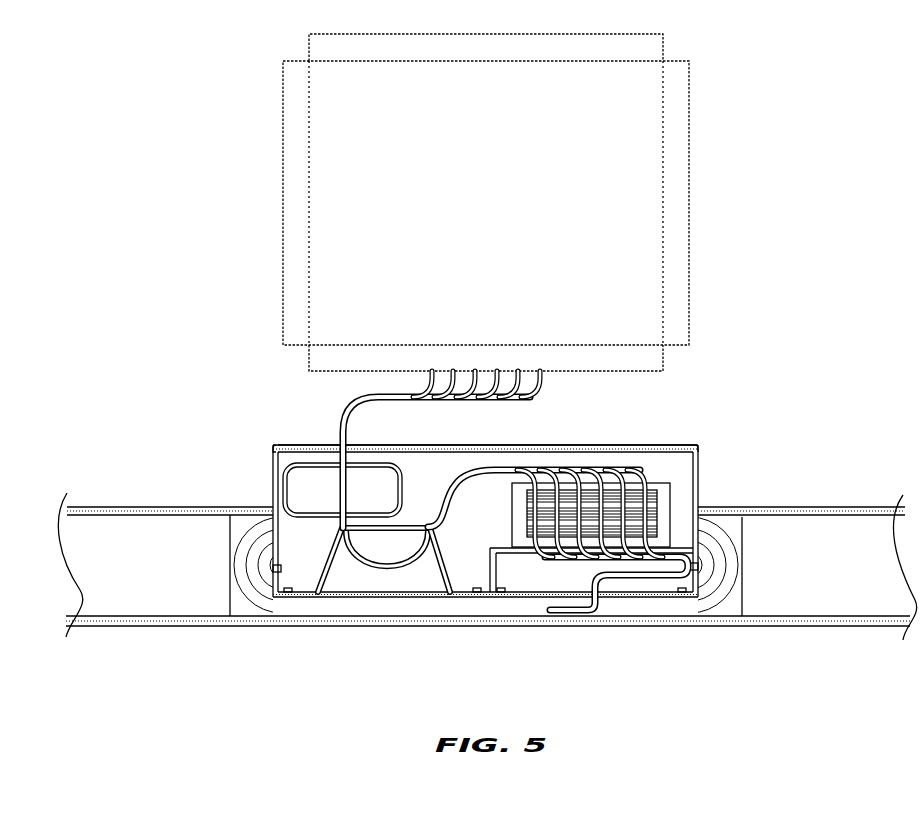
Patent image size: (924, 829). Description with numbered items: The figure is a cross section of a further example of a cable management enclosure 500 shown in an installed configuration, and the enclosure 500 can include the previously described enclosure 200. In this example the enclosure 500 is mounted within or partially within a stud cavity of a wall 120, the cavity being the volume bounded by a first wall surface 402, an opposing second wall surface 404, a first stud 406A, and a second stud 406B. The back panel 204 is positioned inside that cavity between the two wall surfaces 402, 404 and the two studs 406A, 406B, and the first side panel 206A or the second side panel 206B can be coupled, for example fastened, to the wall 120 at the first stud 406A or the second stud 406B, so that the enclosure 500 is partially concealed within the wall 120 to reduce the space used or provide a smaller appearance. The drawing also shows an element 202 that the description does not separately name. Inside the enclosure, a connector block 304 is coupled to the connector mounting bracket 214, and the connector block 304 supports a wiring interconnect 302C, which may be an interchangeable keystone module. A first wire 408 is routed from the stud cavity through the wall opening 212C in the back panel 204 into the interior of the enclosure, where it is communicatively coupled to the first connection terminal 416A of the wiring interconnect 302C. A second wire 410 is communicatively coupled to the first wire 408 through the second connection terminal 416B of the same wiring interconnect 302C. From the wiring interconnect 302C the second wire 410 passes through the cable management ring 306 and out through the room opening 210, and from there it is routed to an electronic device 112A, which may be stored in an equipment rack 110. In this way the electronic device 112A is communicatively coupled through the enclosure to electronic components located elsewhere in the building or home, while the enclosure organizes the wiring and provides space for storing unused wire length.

The cable management enclosure 500 is at (118, 48).
The equipment rack 110 is at (689, 200).
The electronic device 112A is at (485, 34).
The wall 120 is at (487, 561).
The enclosure 200 is at (290, 434).
The housing 202 is at (488, 541).
The back panel 204 is at (675, 590).
The first side panel 206A is at (273, 470).
The second side panel 206B is at (698, 463).
The room opening 210 is at (286, 492).
The wall opening 212C is at (557, 604).
The connector mounting bracket 214 is at (488, 572).
The wiring interconnect 302C is at (614, 542).
The connector block 304 is at (512, 514).
The cable management ring 306 is at (322, 576).
The first wall surface 402 is at (820, 507).
The second wall surface 404 is at (165, 626).
The first stud 406A is at (230, 567).
The second stud 406B is at (742, 565).
The first wire 408 is at (562, 612).
The second wire 410 is at (351, 412).
The first connection terminal 416A is at (655, 520).
The second connection terminal 416B is at (660, 494).